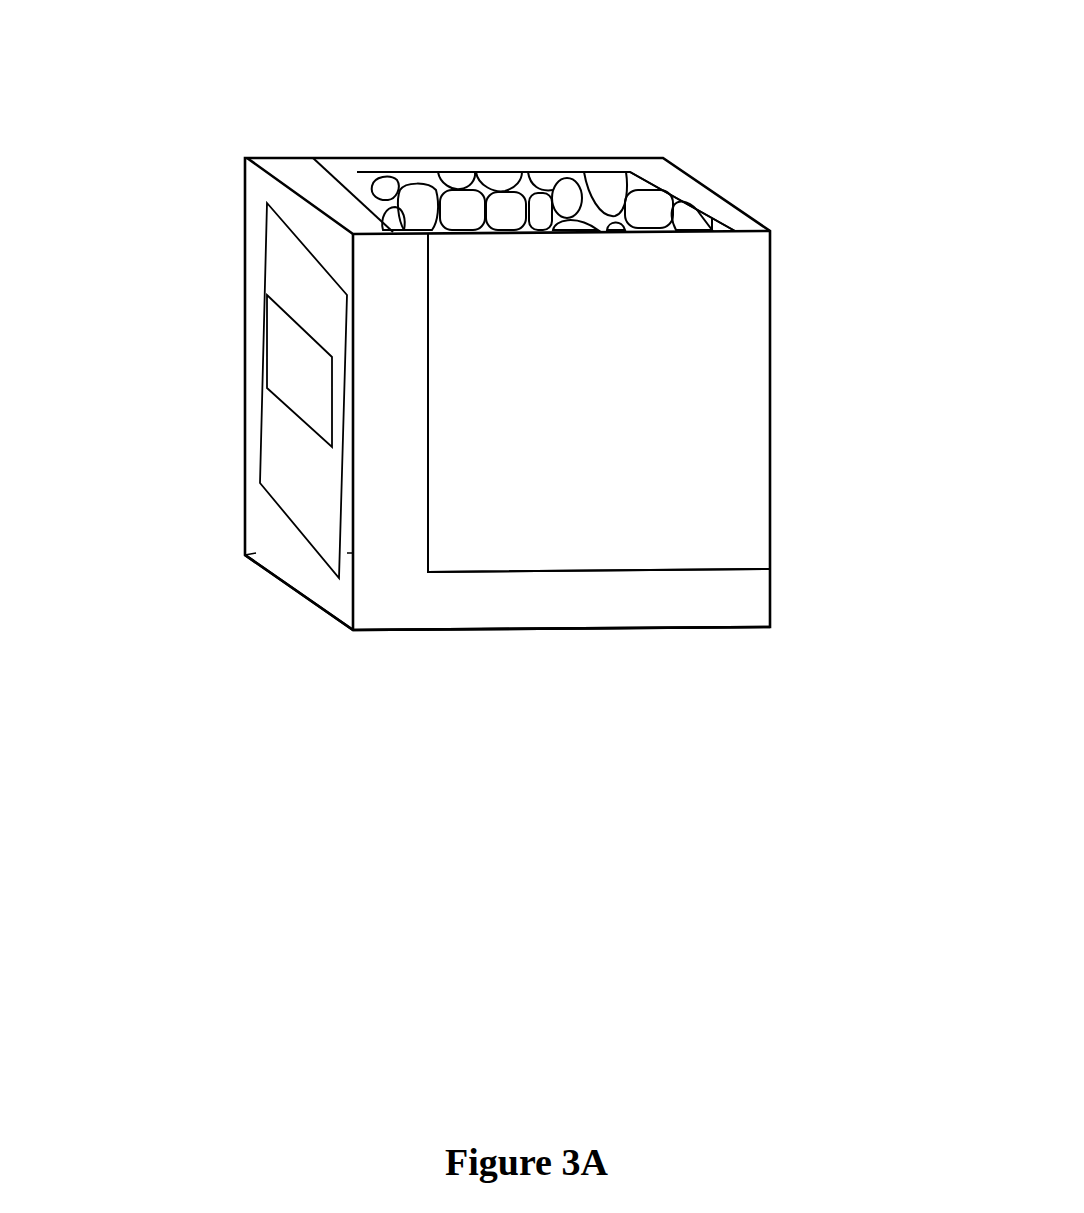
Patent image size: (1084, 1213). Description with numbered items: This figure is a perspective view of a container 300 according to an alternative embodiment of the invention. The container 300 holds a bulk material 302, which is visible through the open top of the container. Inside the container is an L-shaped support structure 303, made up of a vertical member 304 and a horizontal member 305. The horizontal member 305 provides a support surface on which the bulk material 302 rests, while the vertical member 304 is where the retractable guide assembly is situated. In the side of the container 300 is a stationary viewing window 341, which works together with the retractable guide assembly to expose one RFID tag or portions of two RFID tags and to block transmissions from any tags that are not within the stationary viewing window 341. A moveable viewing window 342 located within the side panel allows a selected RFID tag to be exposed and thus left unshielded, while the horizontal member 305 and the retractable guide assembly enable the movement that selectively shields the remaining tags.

The container 300 is at (770, 354).
The bulk material 302 is at (643, 172).
The L-shaped support structure 303 is at (377, 630).
The vertical member 304 is at (386, 206).
The horizontal member 305 is at (770, 597).
The stationary viewing window 341 is at (260, 448).
The moveable viewing window 342 is at (268, 356).